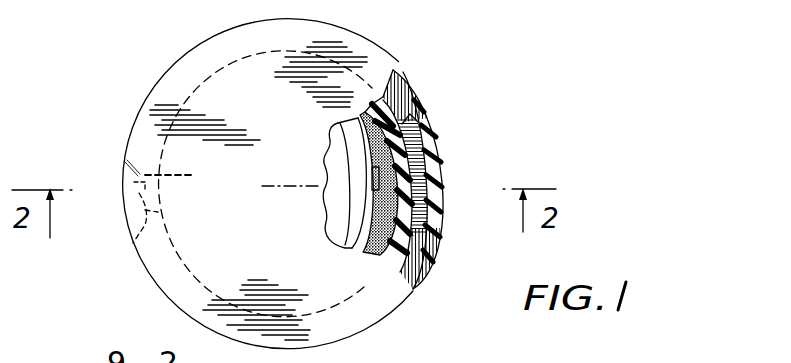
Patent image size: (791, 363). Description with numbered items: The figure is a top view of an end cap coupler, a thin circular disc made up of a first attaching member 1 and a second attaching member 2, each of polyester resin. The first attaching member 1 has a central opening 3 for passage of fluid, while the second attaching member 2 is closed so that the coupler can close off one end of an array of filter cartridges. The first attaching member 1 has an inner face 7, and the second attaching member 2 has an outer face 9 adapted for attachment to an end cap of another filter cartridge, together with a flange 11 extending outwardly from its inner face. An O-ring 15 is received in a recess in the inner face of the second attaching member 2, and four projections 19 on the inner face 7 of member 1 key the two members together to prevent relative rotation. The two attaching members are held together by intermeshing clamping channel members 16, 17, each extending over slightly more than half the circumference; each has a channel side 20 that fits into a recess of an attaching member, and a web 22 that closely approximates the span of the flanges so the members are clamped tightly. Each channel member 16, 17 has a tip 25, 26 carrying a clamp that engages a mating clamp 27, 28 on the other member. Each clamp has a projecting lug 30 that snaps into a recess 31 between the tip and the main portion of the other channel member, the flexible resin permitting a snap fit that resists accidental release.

The first attaching member 1 is at (349, 144).
The second attaching member 2 is at (144, 97).
The central opening 3 is at (337, 173).
The inner face 7 is at (370, 212).
The outer face 9 is at (240, 249).
The flange 11 is at (435, 222).
The O-ring 15 is at (375, 249).
The intermeshing clamping channel member 16 is at (422, 76).
The intermeshing clamping channel member 17 is at (436, 277).
The projections 19 is at (372, 186).
The channel side 20 is at (393, 70).
The web 22 is at (441, 128).
The tip 25 is at (133, 243).
The tip 26 is at (432, 105).
The mating clamp 27 is at (129, 167).
The mating clamp 28 is at (424, 184).
The projecting lug 30 is at (438, 195).
The recess 31 is at (428, 182).